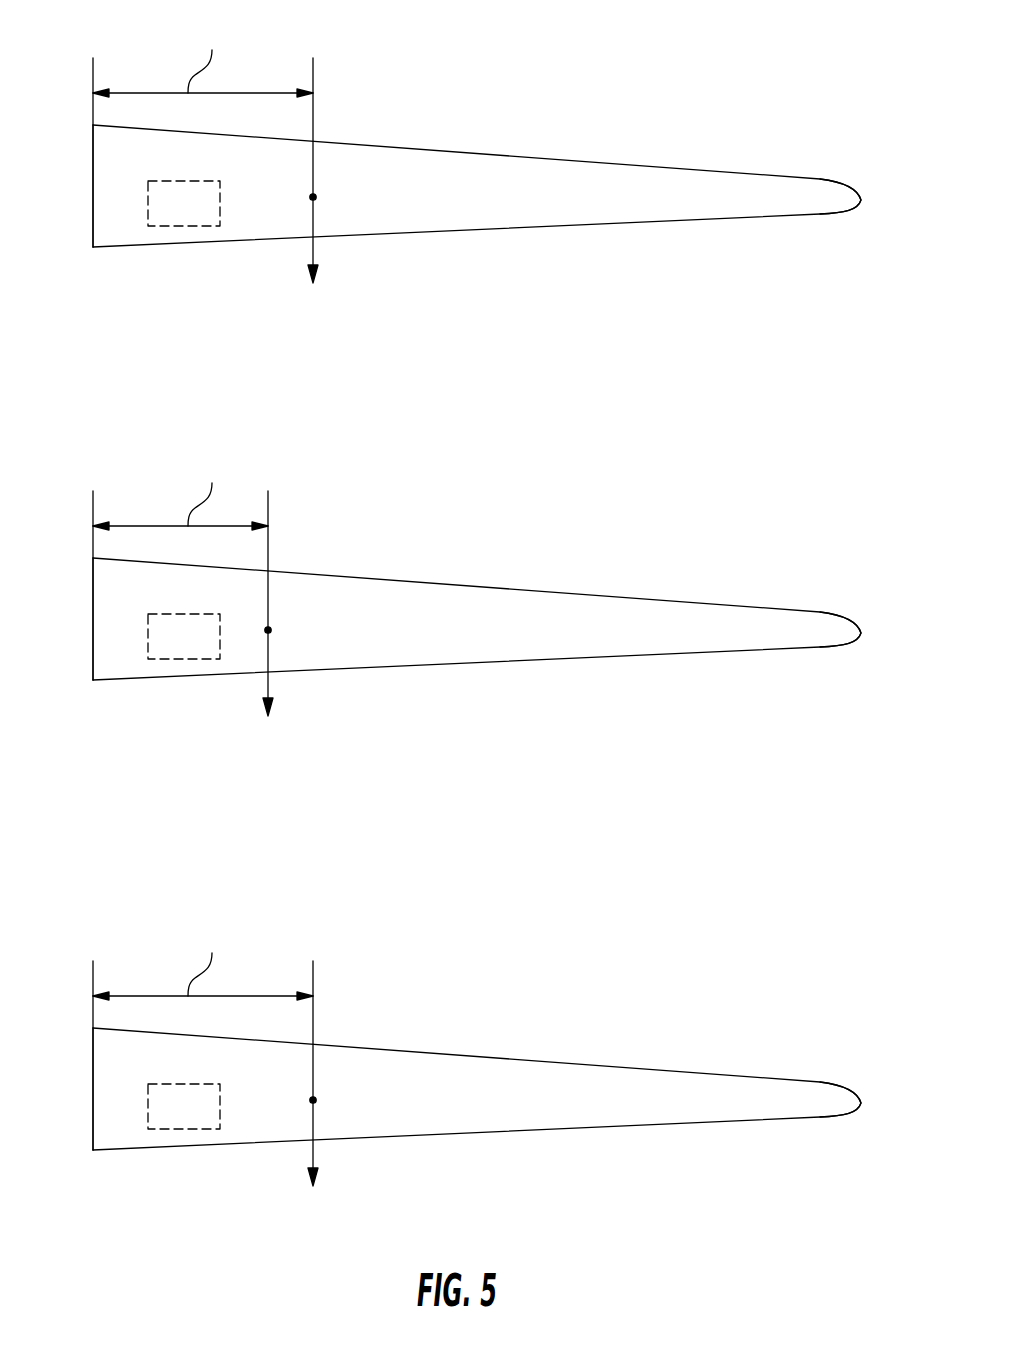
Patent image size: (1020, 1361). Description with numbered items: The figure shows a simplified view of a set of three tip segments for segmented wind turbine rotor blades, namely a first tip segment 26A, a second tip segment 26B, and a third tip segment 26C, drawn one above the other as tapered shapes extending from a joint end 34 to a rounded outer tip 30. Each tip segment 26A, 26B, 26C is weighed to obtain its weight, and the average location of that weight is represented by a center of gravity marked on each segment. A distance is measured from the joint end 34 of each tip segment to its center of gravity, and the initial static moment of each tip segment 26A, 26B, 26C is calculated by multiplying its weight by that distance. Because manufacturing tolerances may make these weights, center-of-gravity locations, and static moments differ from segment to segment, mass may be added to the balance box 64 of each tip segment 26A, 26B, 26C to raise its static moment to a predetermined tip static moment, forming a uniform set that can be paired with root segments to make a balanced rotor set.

The first tip segment 26A is at (660, 68).
The second tip segment 26B is at (477, 583).
The third tip segment 26C is at (477, 1053).
The blade tip 30 is at (861, 200).
The joint end 34 is at (93, 218).
The balance box 64 is at (172, 228).